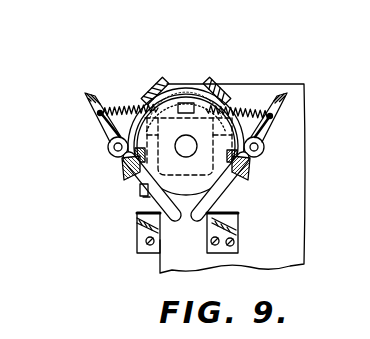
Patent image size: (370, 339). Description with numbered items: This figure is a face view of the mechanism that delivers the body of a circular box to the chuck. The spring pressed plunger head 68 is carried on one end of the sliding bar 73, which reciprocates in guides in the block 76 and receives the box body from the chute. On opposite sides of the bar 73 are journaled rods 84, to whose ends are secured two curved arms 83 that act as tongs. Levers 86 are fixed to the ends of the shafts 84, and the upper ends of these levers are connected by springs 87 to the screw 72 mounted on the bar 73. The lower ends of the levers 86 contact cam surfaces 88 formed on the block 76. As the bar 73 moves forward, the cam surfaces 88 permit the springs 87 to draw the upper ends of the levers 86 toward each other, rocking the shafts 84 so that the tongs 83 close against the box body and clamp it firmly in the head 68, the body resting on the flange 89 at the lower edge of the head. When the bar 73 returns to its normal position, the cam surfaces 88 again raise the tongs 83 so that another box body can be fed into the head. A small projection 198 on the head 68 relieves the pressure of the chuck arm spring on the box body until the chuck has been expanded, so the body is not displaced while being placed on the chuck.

The plunger head 68 is at (141, 191).
The screw 72 is at (187, 102).
The sliding bar 73 is at (143, 197).
The block 76 is at (232, 178).
The curved arms 83 is at (146, 97).
The rods 84 is at (108, 147).
The levers 86 is at (84, 96).
The springs 87 is at (119, 106).
The cam surfaces 88 is at (207, 231).
The flange 89 is at (138, 166).
The small projection 198 is at (226, 182).